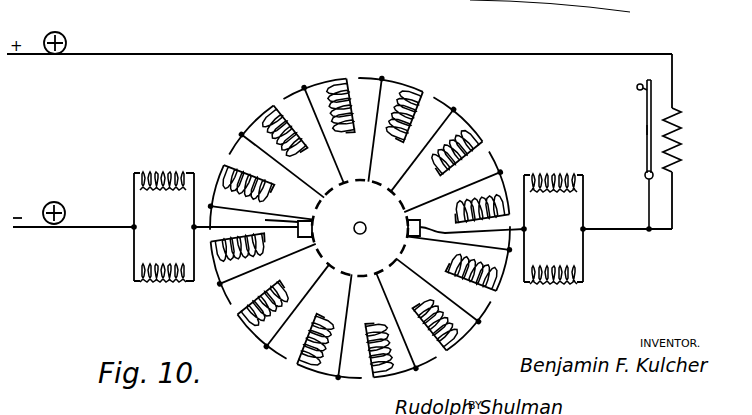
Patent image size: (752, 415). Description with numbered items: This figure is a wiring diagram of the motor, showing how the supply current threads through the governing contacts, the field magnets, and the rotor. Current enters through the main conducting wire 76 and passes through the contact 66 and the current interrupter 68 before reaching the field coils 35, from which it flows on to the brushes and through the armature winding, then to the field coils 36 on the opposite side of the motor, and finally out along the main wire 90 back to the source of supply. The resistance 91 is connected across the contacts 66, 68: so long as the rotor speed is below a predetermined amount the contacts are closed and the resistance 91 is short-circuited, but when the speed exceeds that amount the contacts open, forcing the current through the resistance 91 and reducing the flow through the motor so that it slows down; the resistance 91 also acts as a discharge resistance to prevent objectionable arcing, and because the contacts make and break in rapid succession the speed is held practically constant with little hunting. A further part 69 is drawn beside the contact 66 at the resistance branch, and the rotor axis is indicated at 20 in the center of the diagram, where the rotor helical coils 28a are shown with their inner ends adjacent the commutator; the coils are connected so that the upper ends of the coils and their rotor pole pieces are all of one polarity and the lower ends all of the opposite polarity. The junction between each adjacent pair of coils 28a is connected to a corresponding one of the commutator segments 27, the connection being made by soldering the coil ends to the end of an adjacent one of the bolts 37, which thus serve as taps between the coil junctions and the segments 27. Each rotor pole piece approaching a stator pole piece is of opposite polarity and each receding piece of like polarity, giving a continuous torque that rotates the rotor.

The main conducting wire 76 is at (240, 56).
The main wire 90 is at (89, 231).
The field coils 36 is at (163, 192).
The field coils 35 is at (555, 270).
The resistance 91 is at (676, 124).
The contact 66 is at (661, 87).
The slider pivot contact 69 is at (645, 106).
The current interrupter 68 is at (646, 130).
The helical coils 28a is at (307, 372).
The bolts 37 is at (311, 272).
The segments 27 is at (382, 276).
The shaft 20 is at (353, 230).